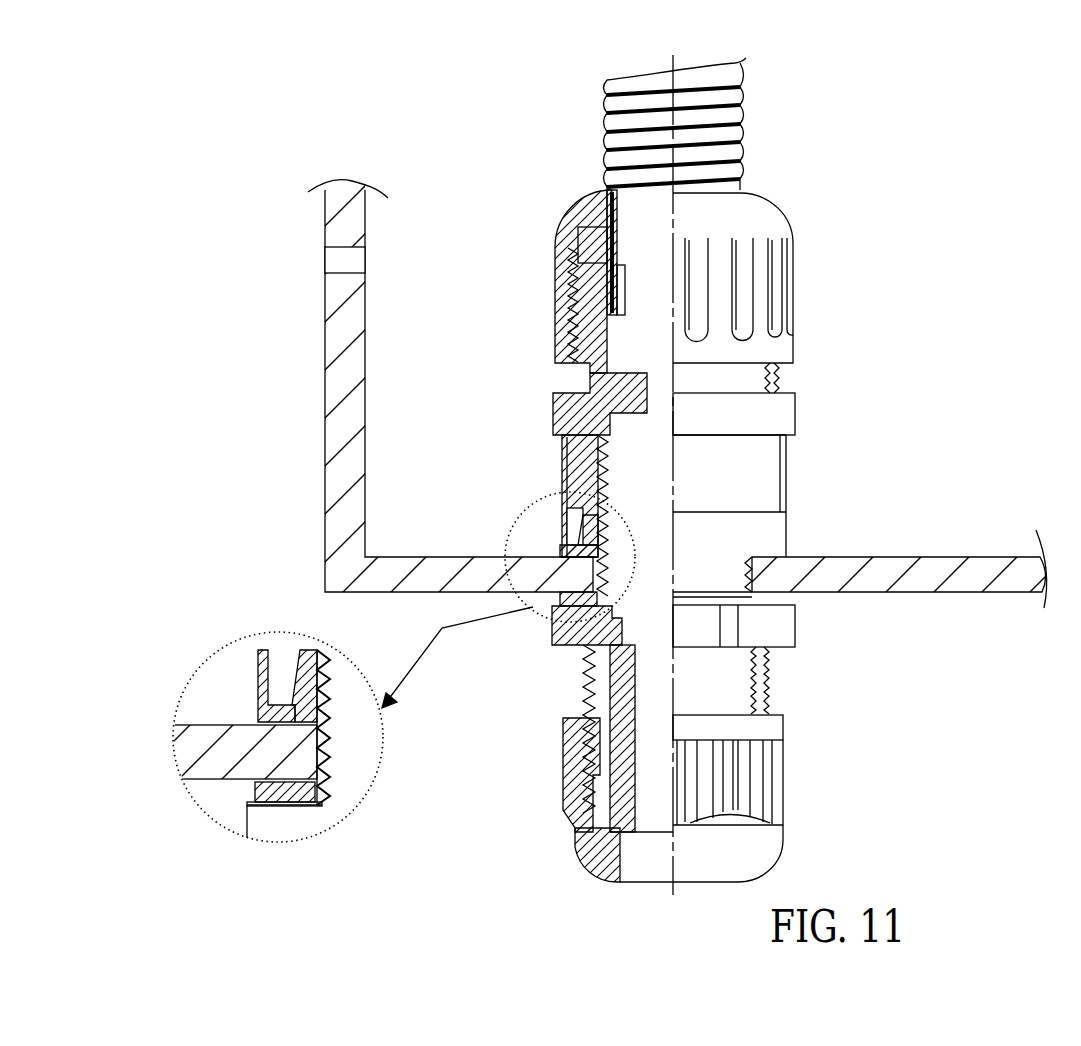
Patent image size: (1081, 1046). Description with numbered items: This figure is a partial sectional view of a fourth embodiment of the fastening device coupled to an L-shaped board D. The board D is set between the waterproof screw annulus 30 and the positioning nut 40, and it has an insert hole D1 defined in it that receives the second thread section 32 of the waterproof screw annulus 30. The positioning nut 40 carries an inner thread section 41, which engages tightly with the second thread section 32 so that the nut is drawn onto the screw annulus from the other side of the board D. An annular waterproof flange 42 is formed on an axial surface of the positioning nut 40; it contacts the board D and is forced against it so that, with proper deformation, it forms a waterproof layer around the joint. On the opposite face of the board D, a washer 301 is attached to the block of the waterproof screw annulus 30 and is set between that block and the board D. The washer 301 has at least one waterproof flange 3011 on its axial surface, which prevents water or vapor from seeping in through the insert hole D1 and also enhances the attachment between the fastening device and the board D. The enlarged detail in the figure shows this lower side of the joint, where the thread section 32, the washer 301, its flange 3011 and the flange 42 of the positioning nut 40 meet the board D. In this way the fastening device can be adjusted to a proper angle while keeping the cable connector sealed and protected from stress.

The waterproof screw annulus 30 is at (553, 660).
The washer 301 is at (257, 793).
The waterproof flange 3011 is at (291, 806).
The second thread section 32 is at (331, 762).
The positioning nut 40 is at (555, 535).
The inner thread section 41 is at (297, 662).
The waterproof flange 42 is at (258, 706).
The board D is at (931, 575).
The insert hole D1 is at (755, 557).